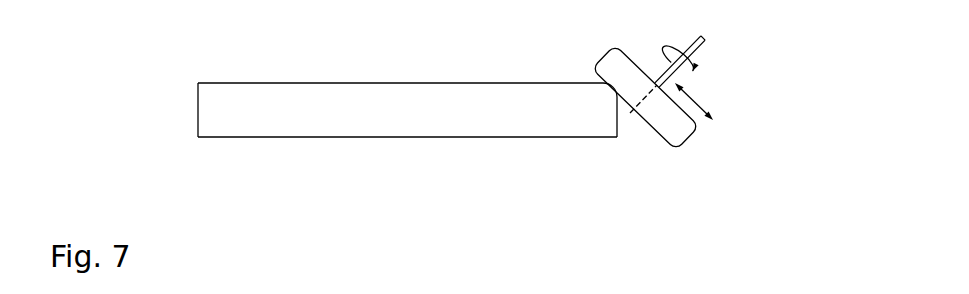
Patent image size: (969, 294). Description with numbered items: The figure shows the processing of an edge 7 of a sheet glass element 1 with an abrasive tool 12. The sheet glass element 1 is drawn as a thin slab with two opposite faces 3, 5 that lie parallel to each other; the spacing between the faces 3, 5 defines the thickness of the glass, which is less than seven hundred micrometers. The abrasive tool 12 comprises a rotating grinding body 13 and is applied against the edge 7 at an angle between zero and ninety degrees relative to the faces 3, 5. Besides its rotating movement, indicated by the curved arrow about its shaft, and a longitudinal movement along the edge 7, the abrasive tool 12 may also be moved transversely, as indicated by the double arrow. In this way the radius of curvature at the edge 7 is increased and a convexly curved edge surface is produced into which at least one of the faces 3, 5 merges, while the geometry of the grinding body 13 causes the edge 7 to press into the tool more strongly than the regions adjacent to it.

The sheet glass element 1 is at (498, 58).
The face 3 is at (325, 82).
The face 5 is at (345, 137).
The edge 7 is at (620, 135).
The abrasive tool 12 is at (707, 99).
The rotating grinding body 13 is at (697, 134).